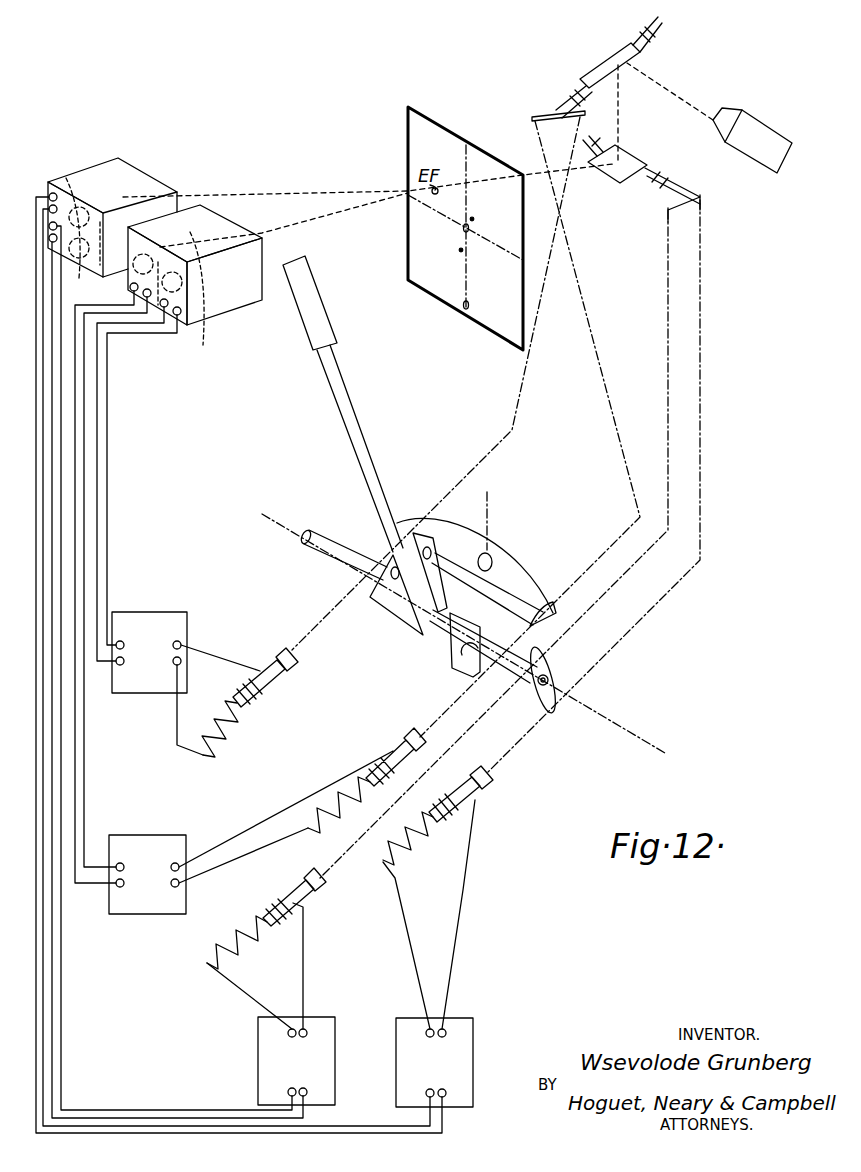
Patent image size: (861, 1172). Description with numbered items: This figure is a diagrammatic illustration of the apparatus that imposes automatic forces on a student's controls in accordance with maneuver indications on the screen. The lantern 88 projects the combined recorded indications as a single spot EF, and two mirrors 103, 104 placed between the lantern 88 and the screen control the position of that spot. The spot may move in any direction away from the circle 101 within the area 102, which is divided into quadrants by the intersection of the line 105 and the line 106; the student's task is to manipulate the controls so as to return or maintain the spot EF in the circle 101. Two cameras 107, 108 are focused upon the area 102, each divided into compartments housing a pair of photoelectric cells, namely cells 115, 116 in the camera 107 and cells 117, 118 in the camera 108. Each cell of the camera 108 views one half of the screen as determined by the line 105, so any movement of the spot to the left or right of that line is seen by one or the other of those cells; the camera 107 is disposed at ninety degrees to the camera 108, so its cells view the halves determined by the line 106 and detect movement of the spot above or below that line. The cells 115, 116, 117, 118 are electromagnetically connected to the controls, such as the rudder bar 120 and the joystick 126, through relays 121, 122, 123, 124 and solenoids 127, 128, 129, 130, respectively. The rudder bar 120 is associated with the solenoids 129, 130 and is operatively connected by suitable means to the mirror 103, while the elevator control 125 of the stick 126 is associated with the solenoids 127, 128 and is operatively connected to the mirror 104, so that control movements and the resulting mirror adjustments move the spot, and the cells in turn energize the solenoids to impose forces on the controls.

The lantern 88 is at (750, 133).
The circle 101 is at (463, 230).
The area 102 is at (405, 170).
The mirror 103 is at (608, 66).
The mirror 104 is at (640, 160).
The line 105 is at (467, 310).
The line 106 is at (503, 252).
The camera 107 is at (105, 213).
The camera 108 is at (207, 298).
The photoelectric cell 115 is at (50, 196).
The photoelectric cell 116 is at (81, 237).
The photoelectric cell 117 is at (195, 287).
The photoelectric cell 118 is at (179, 300).
The rudder bar 120 is at (515, 585).
The relay 121 is at (460, 1047).
The relay 122 is at (323, 1040).
The relay 123 is at (146, 900).
The relay 124 is at (162, 627).
The elevator control 125 is at (553, 668).
The joystick 126 is at (372, 462).
The solenoid 127 is at (460, 810).
The solenoid 128 is at (288, 920).
The solenoid 129 is at (362, 774).
The solenoid 130 is at (242, 718).